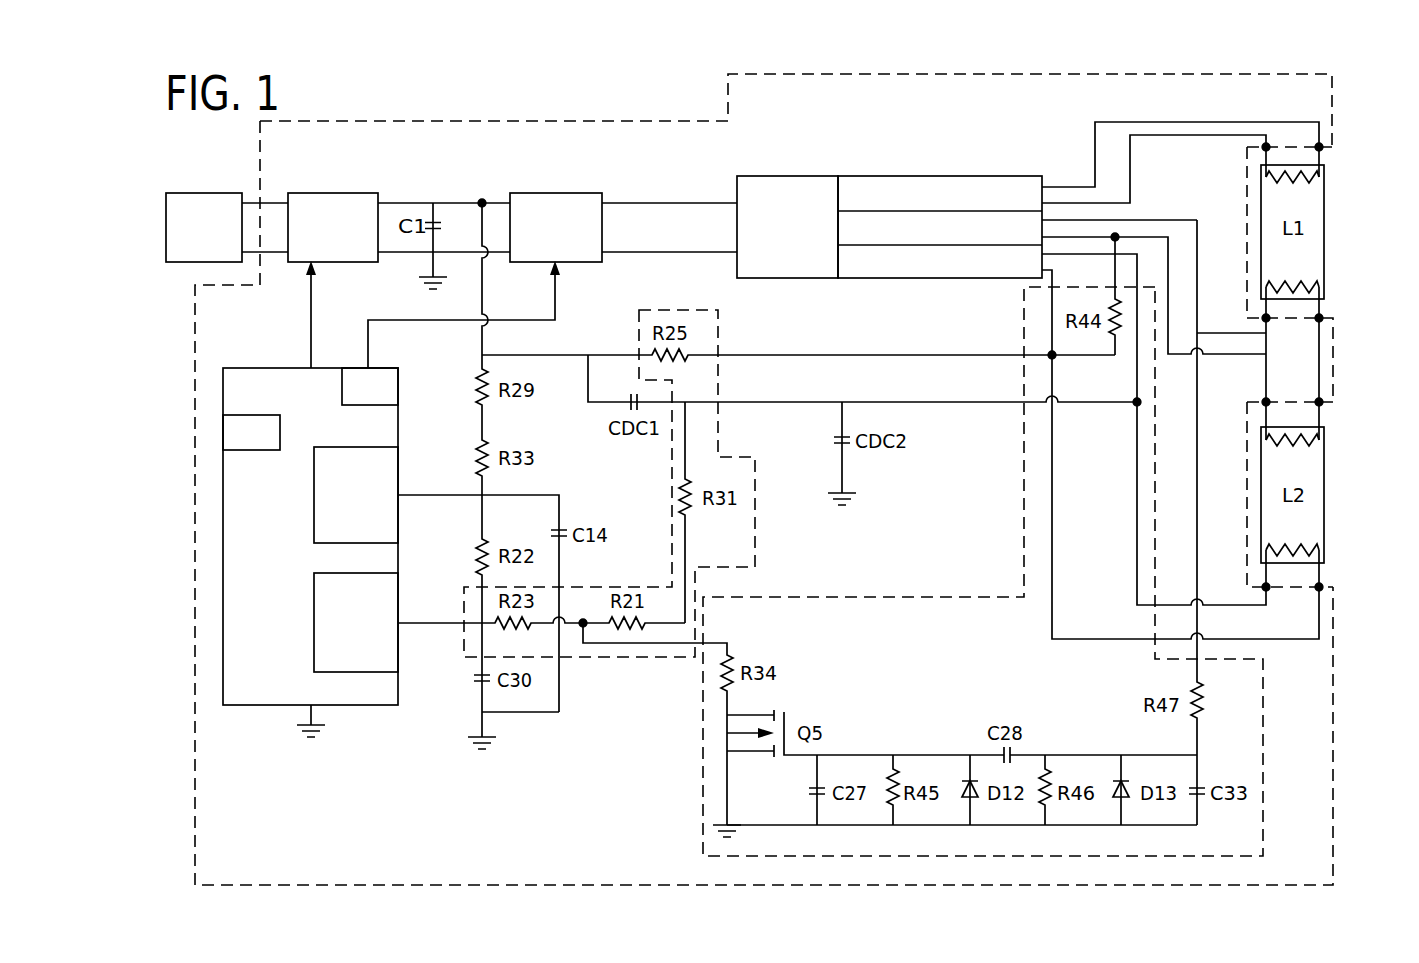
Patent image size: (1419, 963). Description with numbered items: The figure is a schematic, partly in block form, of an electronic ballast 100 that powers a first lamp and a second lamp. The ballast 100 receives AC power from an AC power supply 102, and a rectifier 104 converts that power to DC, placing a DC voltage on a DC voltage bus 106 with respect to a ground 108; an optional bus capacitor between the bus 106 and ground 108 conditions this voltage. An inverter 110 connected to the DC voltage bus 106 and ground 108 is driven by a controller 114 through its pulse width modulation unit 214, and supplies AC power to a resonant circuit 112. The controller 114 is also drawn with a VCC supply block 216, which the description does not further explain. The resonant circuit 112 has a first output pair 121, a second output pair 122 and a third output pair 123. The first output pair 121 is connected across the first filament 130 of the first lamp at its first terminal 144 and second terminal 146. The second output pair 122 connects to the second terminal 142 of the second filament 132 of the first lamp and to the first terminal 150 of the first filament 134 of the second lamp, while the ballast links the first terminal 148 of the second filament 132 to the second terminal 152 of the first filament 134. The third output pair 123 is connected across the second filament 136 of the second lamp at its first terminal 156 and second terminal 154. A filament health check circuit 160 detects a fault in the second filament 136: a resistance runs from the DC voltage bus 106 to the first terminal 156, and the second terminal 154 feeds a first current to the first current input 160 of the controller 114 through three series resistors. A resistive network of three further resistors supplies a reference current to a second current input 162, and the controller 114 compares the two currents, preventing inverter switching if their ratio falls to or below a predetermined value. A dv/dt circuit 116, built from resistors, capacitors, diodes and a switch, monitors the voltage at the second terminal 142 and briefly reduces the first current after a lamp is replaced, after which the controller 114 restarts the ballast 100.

The electronic ballast 100 is at (496, 121).
The AC power supply 102 is at (214, 188).
The rectifier 104 is at (341, 188).
The DC voltage bus 106 is at (482, 203).
The ground 108 is at (433, 294).
The inverter 110 is at (566, 184).
The resonant circuit 112 is at (792, 168).
The controller 114 is at (258, 368).
The dv/dt circuit 116 is at (955, 597).
The first output pair 121 is at (979, 168).
The second output pair 122 is at (843, 235).
The third output pair 123 is at (951, 280).
The first filament of the first lamp 130 is at (1300, 183).
The second filament of the first lamp 132 is at (1295, 283).
The first filament of the second lamp 134 is at (1300, 440).
The second filament of the second lamp 136 is at (1300, 550).
The second terminal of the second filament of the first lamp 142 is at (1266, 318).
The first terminal of the first filament of the first lamp 144 is at (1266, 147).
The second terminal of the first filament of the first lamp 146 is at (1319, 147).
The first terminal of the second filament of the first lamp 148 is at (1319, 318).
The first terminal of the first filament of the second lamp 150 is at (1266, 402).
The second terminal of the first filament of the second lamp 152 is at (1319, 402).
The second terminal of the second filament of the second lamp 154 is at (1266, 587).
The first terminal of the second filament of the second lamp 156 is at (1319, 587).
The filament health check circuit 160 is at (314, 628).
The second current input 162 is at (314, 524).
The pulse width modulation unit 214 is at (359, 368).
The VCC 216 is at (254, 454).